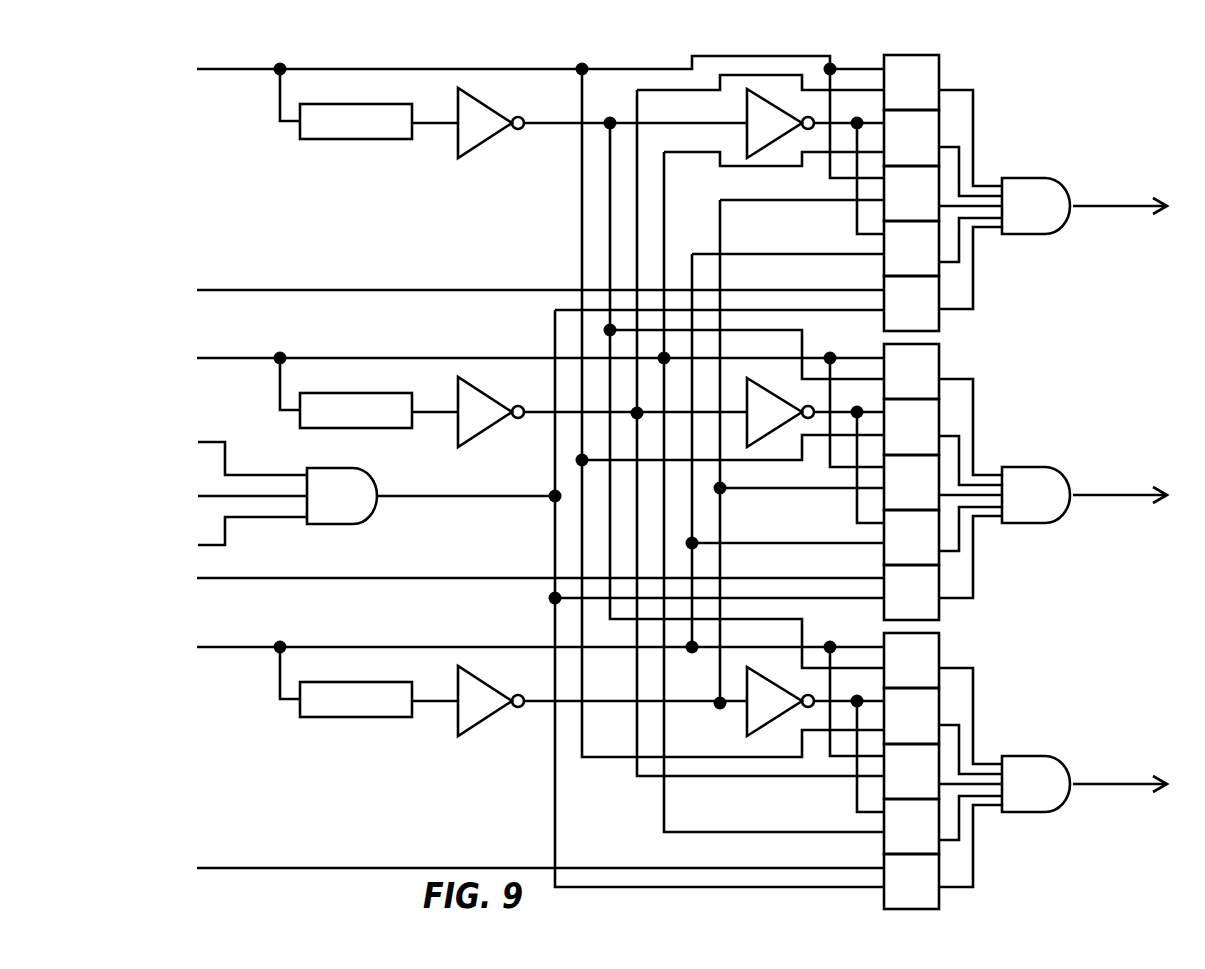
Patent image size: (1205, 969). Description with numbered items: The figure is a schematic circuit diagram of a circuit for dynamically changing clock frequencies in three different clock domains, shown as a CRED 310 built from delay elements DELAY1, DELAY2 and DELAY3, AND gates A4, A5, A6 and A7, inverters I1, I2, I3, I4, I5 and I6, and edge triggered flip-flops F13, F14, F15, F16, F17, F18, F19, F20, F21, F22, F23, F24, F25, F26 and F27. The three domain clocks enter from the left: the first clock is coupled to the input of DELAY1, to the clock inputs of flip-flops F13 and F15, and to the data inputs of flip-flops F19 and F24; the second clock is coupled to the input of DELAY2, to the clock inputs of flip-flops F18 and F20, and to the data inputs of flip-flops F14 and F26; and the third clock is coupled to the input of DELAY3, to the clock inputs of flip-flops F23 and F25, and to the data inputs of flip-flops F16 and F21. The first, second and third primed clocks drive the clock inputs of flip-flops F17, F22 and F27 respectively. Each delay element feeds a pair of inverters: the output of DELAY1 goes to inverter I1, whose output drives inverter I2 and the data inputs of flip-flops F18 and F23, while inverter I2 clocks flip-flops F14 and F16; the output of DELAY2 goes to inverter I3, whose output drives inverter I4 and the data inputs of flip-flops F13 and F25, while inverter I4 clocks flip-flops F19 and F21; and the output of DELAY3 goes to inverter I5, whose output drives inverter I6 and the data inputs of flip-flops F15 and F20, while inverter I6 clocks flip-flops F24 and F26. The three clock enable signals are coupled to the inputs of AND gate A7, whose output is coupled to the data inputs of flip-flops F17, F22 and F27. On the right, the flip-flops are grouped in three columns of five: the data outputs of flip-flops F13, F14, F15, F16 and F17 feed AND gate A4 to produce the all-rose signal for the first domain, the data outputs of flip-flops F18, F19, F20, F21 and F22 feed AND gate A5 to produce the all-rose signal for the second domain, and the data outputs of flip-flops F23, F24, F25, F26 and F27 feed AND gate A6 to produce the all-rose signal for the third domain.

The CRED 310 is at (1019, 102).
The edge triggered flip-flop F13 is at (911, 82).
The edge triggered flip-flop F14 is at (911, 138).
The edge triggered flip-flop F15 is at (911, 193).
The edge triggered flip-flop F16 is at (911, 248).
The edge triggered flip-flop F17 is at (911, 303).
The edge triggered flip-flop F18 is at (911, 371).
The edge triggered flip-flop F19 is at (911, 427).
The edge triggered flip-flop F20 is at (911, 482).
The edge triggered flip-flop F21 is at (911, 537).
The edge triggered flip-flop F22 is at (911, 592).
The edge triggered flip-flop F23 is at (911, 660).
The edge triggered flip-flop F24 is at (911, 716).
The edge triggered flip-flop F25 is at (911, 771).
The edge triggered flip-flop F26 is at (911, 826).
The edge triggered flip-flop F27 is at (911, 881).
The inverter I1 is at (491, 123).
The inverter I2 is at (780, 123).
The inverter I3 is at (491, 412).
The inverter I4 is at (780, 412).
The inverter I5 is at (491, 701).
The inverter I6 is at (780, 701).
The AND gate A4 is at (1036, 206).
The AND gate A5 is at (1036, 495).
The AND gate A6 is at (1036, 784).
The AND gate A7 is at (342, 496).
The delay element DELAY1 is at (356, 121).
The delay element DELAY2 is at (356, 410).
The delay element DELAY3 is at (356, 699).